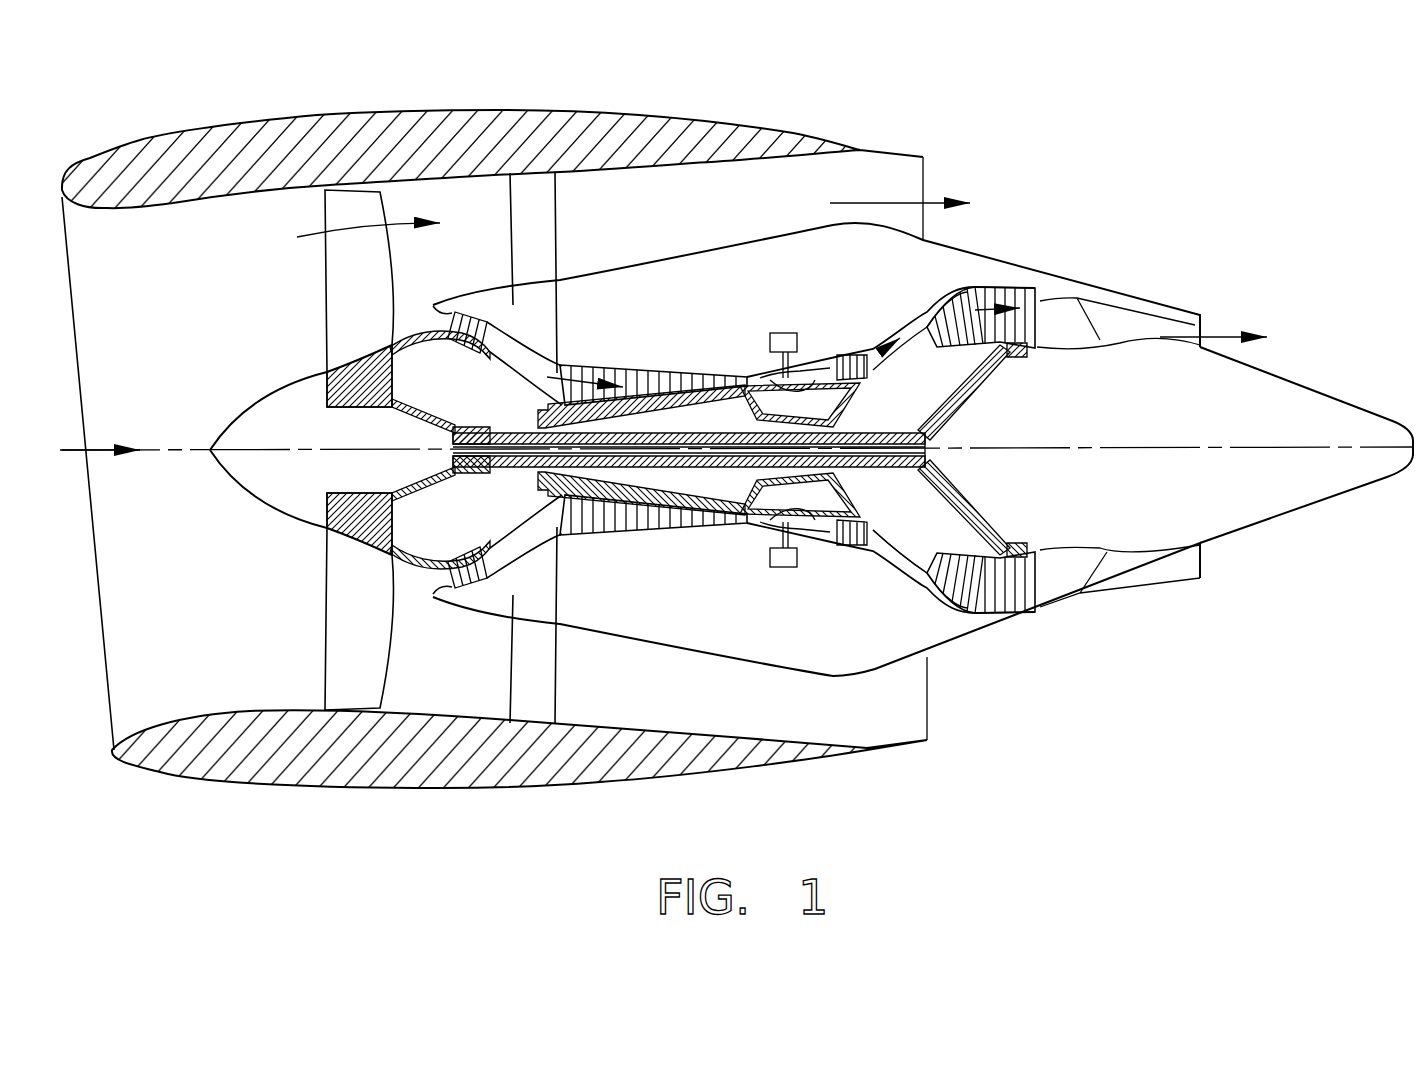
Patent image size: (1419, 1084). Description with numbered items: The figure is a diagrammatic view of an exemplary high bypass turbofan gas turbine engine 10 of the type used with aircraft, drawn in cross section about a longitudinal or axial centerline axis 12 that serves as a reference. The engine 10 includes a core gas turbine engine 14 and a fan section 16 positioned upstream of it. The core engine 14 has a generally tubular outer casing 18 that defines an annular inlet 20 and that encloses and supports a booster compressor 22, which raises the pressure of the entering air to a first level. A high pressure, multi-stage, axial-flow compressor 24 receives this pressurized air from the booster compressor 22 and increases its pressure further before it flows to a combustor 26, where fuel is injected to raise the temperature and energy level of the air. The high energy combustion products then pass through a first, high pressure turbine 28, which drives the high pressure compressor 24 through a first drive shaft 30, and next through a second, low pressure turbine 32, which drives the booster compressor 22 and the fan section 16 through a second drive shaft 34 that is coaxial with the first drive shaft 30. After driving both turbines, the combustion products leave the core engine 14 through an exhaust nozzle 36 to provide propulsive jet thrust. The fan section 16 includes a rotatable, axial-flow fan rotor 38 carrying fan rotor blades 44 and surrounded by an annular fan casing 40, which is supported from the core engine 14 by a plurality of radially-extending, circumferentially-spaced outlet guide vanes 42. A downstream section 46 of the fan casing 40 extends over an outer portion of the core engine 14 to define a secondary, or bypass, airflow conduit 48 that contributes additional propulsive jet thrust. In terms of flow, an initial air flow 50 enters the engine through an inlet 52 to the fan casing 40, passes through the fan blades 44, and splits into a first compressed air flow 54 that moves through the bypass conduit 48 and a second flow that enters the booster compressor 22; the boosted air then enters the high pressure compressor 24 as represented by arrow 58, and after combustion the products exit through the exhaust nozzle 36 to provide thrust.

The gas turbine engine 10 is at (1103, 138).
The longitudinal or axial centerline axis 12 is at (323, 638).
The core gas turbine engine 14 is at (380, 788).
The fan section 16 is at (98, 713).
The outer casing 18 is at (97, 448).
The annular inlet 20 is at (477, 580).
The booster compressor 22 is at (598, 520).
The high pressure compressor 24 is at (808, 525).
The combustor 26 is at (835, 525).
The first turbine 28 is at (868, 535).
The first drive shaft 30 is at (1030, 600).
The second turbine 32 is at (850, 405).
The second drive shaft 34 is at (518, 432).
The exhaust nozzle 36 is at (1153, 440).
The fan rotor 38 is at (1040, 265).
The fan casing 40 is at (558, 224).
The outlet guide vanes 42 is at (633, 213).
The fan rotor blades 44 is at (1335, 385).
The downstream section 46 is at (1077, 557).
The bypass airflow conduit 48 is at (1202, 318).
The initial air flow 50 is at (580, 375).
The inlet 52 is at (770, 548).
The first compressed air flow 54 is at (945, 310).
The second compressed air flow entering high pressure compressor 58 is at (985, 290).